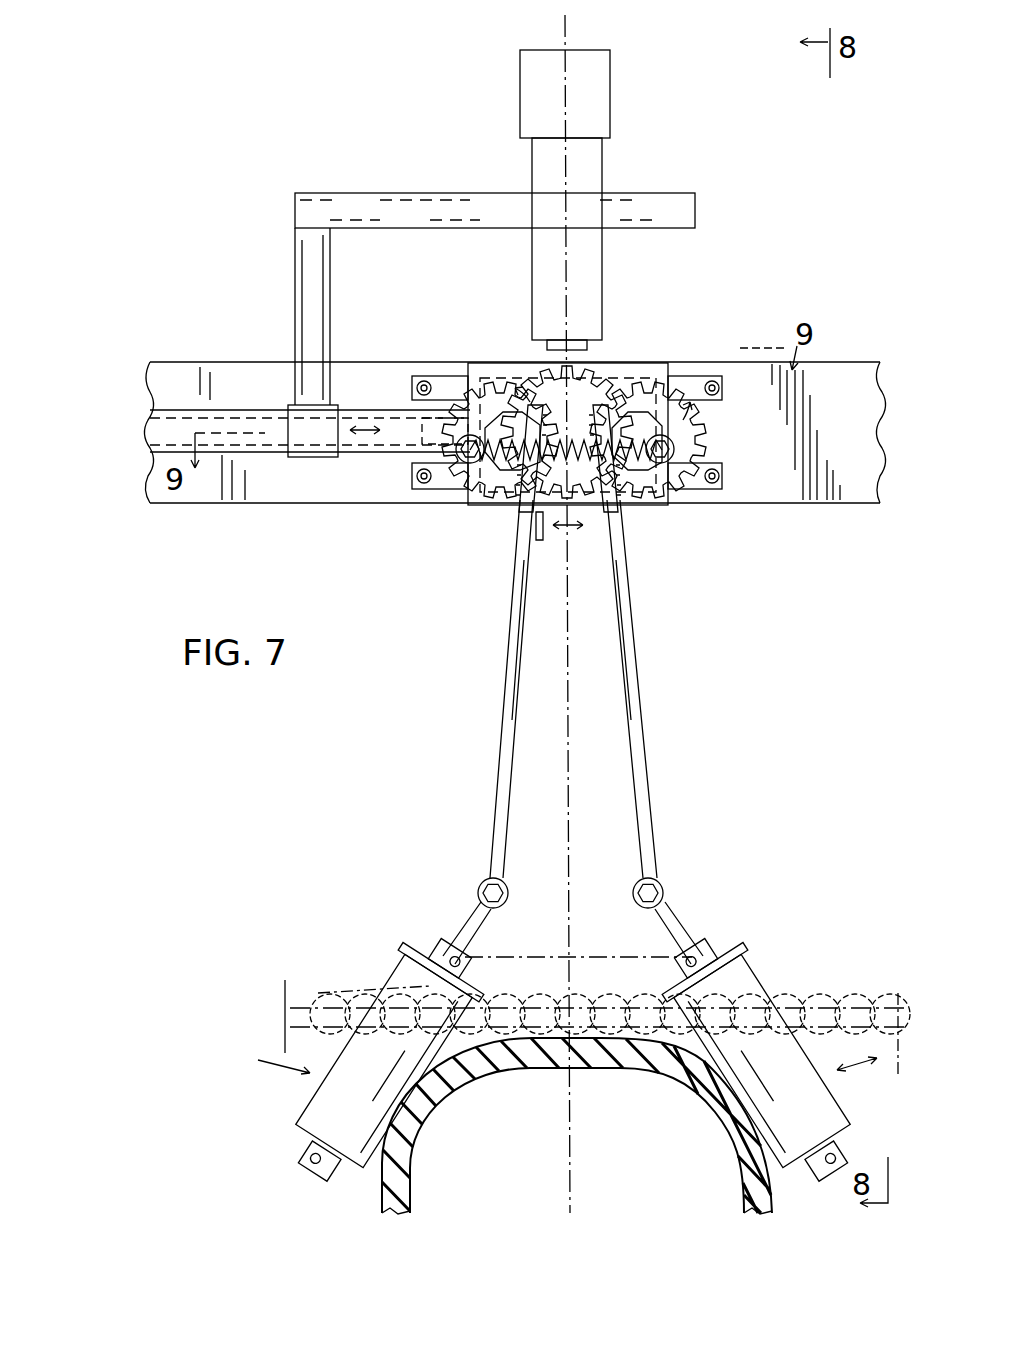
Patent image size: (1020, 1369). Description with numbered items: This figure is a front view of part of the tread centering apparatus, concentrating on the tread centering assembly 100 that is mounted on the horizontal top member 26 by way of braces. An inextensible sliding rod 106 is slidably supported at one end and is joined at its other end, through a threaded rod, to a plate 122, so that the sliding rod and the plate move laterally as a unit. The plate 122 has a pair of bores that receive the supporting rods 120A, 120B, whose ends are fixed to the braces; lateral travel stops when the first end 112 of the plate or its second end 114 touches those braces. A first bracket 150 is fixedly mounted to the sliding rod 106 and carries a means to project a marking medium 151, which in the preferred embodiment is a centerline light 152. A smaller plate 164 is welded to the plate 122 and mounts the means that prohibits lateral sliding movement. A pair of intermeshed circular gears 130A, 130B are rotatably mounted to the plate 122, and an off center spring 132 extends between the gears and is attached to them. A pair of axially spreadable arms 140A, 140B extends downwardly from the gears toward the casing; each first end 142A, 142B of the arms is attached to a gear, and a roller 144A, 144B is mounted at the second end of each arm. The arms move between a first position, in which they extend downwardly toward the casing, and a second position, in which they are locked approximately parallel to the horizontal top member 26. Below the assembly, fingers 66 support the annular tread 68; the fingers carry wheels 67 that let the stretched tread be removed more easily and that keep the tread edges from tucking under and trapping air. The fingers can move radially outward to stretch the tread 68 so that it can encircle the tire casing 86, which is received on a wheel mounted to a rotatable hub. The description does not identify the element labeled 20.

The support slab / base plate 20 is at (841, 353).
The horizontal top member 26 is at (350, 505).
The inextensible sliding rod 106 is at (250, 456).
The first bracket 150 is at (367, 193).
The means to project a marking medium 151 is at (599, 178).
The centerline light 152 is at (612, 75).
The tread centering assembly 100 is at (649, 348).
The plate 122 is at (595, 365).
The first end of the plate 112 is at (475, 395).
The first end of arm 142A is at (505, 405).
The first end of arm 142B is at (612, 410).
The supporting rod 120A is at (706, 385).
The supporting rod 120B is at (712, 482).
The circular gear 130A is at (480, 472).
The circular gear 130B is at (658, 485).
The off center spring 132 is at (505, 500).
The second end of the plate 114 is at (672, 470).
The plate 164 is at (541, 542).
The axially spreadable arm 140A is at (506, 750).
The axially spreadable arm 140B is at (630, 720).
The annular tread 68 is at (537, 956).
The roller 144A is at (403, 975).
The roller 144B is at (747, 973).
The wheels 67 is at (872, 992).
The fingers 66 is at (583, 1040).
The tire casing 86 is at (768, 1198).